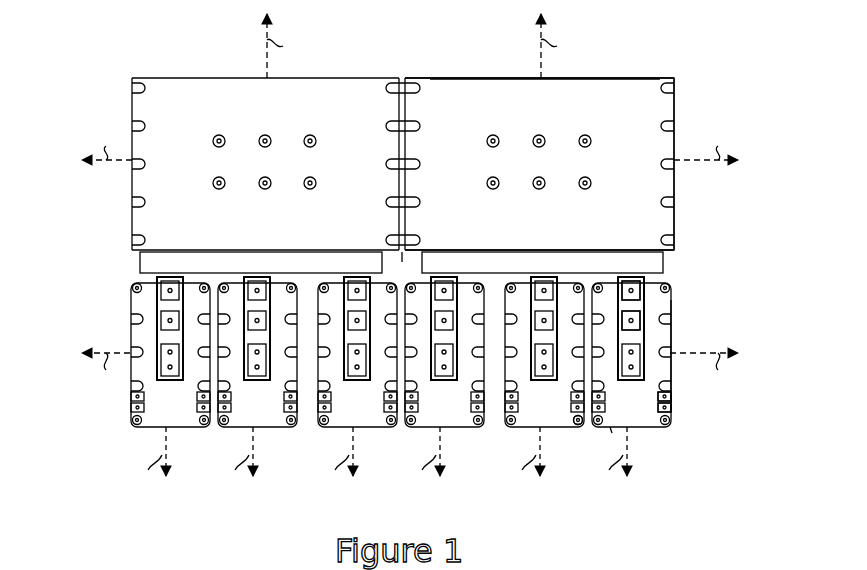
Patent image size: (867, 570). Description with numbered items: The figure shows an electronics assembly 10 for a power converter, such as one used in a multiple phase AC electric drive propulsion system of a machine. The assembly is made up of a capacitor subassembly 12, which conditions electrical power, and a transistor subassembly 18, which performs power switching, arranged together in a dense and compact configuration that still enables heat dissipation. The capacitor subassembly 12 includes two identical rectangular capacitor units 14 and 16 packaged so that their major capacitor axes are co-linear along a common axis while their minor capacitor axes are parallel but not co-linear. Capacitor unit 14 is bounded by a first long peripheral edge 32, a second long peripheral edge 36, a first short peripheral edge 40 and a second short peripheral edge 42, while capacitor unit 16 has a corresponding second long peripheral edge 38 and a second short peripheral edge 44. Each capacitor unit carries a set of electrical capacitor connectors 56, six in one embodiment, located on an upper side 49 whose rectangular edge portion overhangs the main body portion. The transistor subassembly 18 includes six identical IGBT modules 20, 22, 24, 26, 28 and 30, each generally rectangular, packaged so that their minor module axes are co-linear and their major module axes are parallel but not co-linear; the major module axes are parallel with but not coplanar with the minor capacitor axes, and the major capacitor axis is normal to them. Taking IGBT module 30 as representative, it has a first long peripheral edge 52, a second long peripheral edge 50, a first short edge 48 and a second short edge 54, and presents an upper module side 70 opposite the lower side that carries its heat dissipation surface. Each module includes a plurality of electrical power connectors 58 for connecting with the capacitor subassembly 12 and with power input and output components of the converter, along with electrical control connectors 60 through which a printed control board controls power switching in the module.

The electronics assembly 10 is at (84, 60).
The capacitor subassembly 12 is at (694, 88).
The capacitor unit 14 is at (674, 214).
The capacitor unit 16 is at (132, 209).
The transistor subassembly 18 is at (108, 414).
The IGBT module 20 is at (168, 428).
The IGBT module 22 is at (260, 428).
The IGBT module 24 is at (358, 428).
The IGBT module 26 is at (446, 428).
The IGBT module 28 is at (530, 428).
The IGBT module 30 is at (638, 428).
The first peripheral edge 32 is at (358, 77).
The second peripheral edge 36 is at (663, 251).
The second peripheral edge 38 is at (140, 257).
The third peripheral edge 40 is at (674, 112).
The fourth peripheral edge 42 is at (401, 80).
The fourth peripheral edge 44 is at (403, 267).
The third peripheral edge 48 is at (612, 428).
The upper side 49 is at (458, 90).
The second peripheral edge 50 is at (578, 426).
The first peripheral edge 52 is at (671, 338).
The fourth peripheral edge 54 is at (663, 278).
The electrical capacitor connectors 56 is at (493, 134).
The electrical power connectors 58 is at (632, 290).
The electrical control connectors 60 is at (666, 410).
The upper module side 70 is at (664, 394).